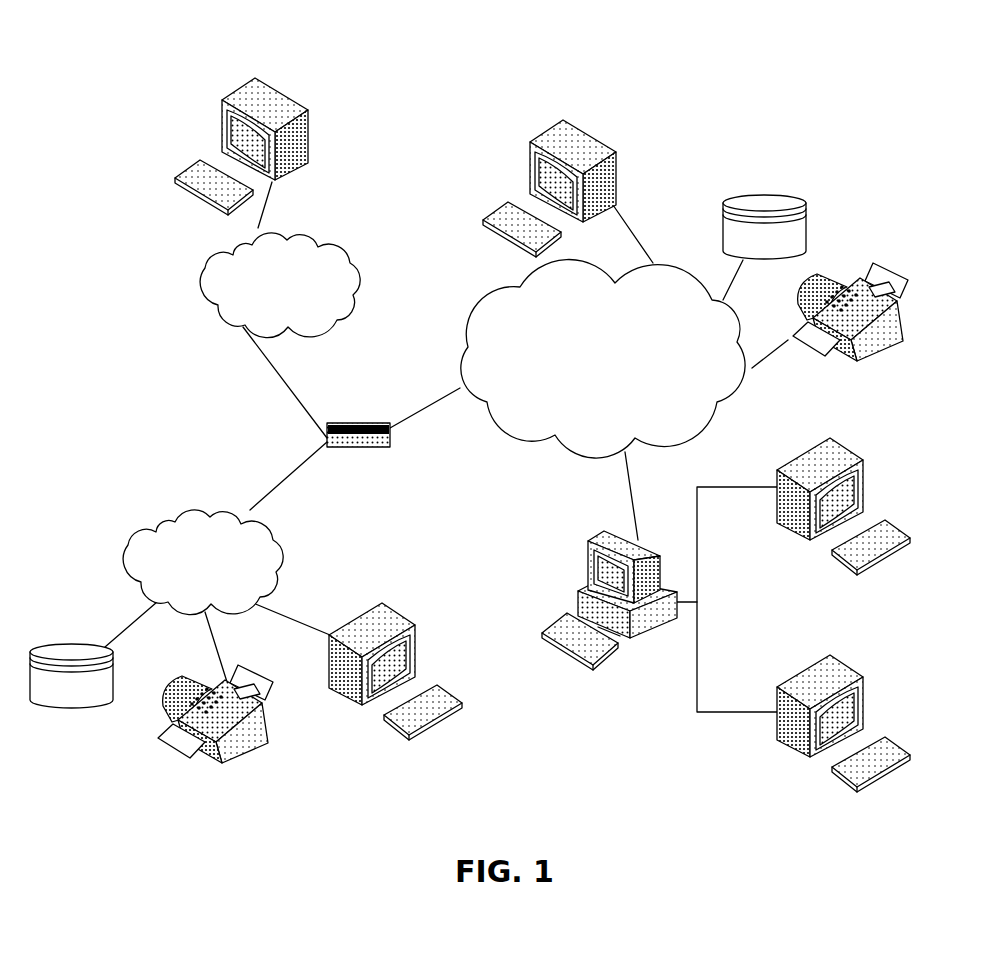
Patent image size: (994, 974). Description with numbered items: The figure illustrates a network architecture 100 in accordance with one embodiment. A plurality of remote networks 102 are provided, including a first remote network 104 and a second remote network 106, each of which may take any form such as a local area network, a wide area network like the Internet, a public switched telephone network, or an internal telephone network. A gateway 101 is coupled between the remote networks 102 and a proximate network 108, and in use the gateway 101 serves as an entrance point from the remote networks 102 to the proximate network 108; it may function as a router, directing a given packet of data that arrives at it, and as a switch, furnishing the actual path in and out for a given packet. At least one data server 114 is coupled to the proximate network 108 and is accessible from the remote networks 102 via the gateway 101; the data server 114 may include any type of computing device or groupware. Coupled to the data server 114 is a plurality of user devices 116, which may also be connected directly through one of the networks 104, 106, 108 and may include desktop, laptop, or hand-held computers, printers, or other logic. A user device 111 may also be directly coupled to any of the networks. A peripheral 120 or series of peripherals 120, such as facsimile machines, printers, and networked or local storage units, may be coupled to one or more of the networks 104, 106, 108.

The architecture 100 is at (152, 59).
The gateway 101 is at (344, 423).
The remote networks 102 is at (172, 346).
The first remote network 104 is at (130, 534).
The second remote network 106 is at (350, 252).
The proximate network 108 is at (707, 425).
The user device 111 is at (617, 155).
The data server 114 is at (589, 554).
The user devices 116 is at (309, 121).
The peripheral 120 is at (73, 712).